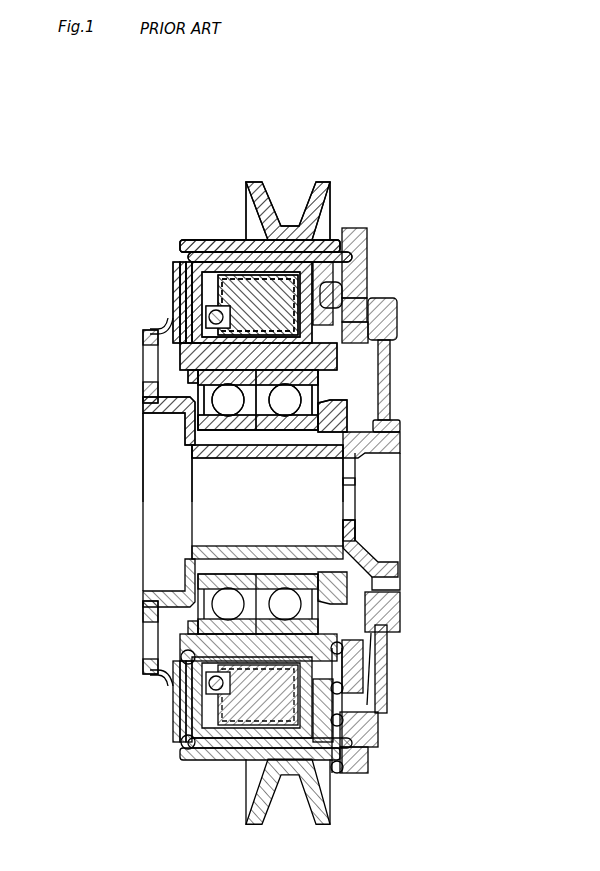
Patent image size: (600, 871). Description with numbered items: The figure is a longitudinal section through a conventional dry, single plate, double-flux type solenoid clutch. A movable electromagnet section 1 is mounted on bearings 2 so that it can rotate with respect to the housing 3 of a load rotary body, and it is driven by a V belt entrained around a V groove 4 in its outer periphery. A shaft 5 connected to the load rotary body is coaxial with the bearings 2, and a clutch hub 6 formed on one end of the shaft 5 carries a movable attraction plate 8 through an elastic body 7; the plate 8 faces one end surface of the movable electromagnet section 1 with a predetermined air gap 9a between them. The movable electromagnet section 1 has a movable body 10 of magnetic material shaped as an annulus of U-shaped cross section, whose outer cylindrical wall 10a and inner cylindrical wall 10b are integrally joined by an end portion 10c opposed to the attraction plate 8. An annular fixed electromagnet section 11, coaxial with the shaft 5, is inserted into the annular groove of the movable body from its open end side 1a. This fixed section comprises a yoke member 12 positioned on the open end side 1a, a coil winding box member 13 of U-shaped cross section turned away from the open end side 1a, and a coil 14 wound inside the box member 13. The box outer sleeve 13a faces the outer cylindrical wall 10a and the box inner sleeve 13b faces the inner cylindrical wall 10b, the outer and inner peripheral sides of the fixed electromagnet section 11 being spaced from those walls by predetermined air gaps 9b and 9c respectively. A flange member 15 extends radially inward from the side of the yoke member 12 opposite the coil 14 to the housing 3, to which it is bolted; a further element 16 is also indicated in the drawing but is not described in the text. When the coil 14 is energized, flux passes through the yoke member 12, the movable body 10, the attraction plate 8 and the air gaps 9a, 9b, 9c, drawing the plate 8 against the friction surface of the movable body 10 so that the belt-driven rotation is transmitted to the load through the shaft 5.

The movable electromagnet section 1 is at (297, 107).
The movable body 10 is at (222, 238).
The V groove 4 is at (301, 234).
The outer cylindrical wall 10a is at (181, 241).
The box outer sleeve 13a is at (200, 253).
The movable attraction plate 8 is at (365, 232).
The end portion 10c is at (353, 293).
The elastic body 7 is at (399, 313).
The box inner sleeve 13b is at (337, 346).
The clutch hub 6 is at (390, 388).
The bearings 2 is at (372, 444).
The shaft 5 is at (362, 550).
The air gap 9a is at (341, 649).
The air gap 9b is at (165, 675).
The air gap 9c is at (178, 748).
The housing 3 is at (188, 424).
The fixed electromagnet section 11 is at (100, 208).
The coil winding box member 13 is at (181, 248).
The yoke member 12 is at (187, 263).
The coil 14 is at (174, 273).
The open end side 1a is at (162, 301).
The flange member 15 is at (213, 301).
The support flange 16 is at (181, 347).
The inner cylindrical wall 10b is at (182, 361).